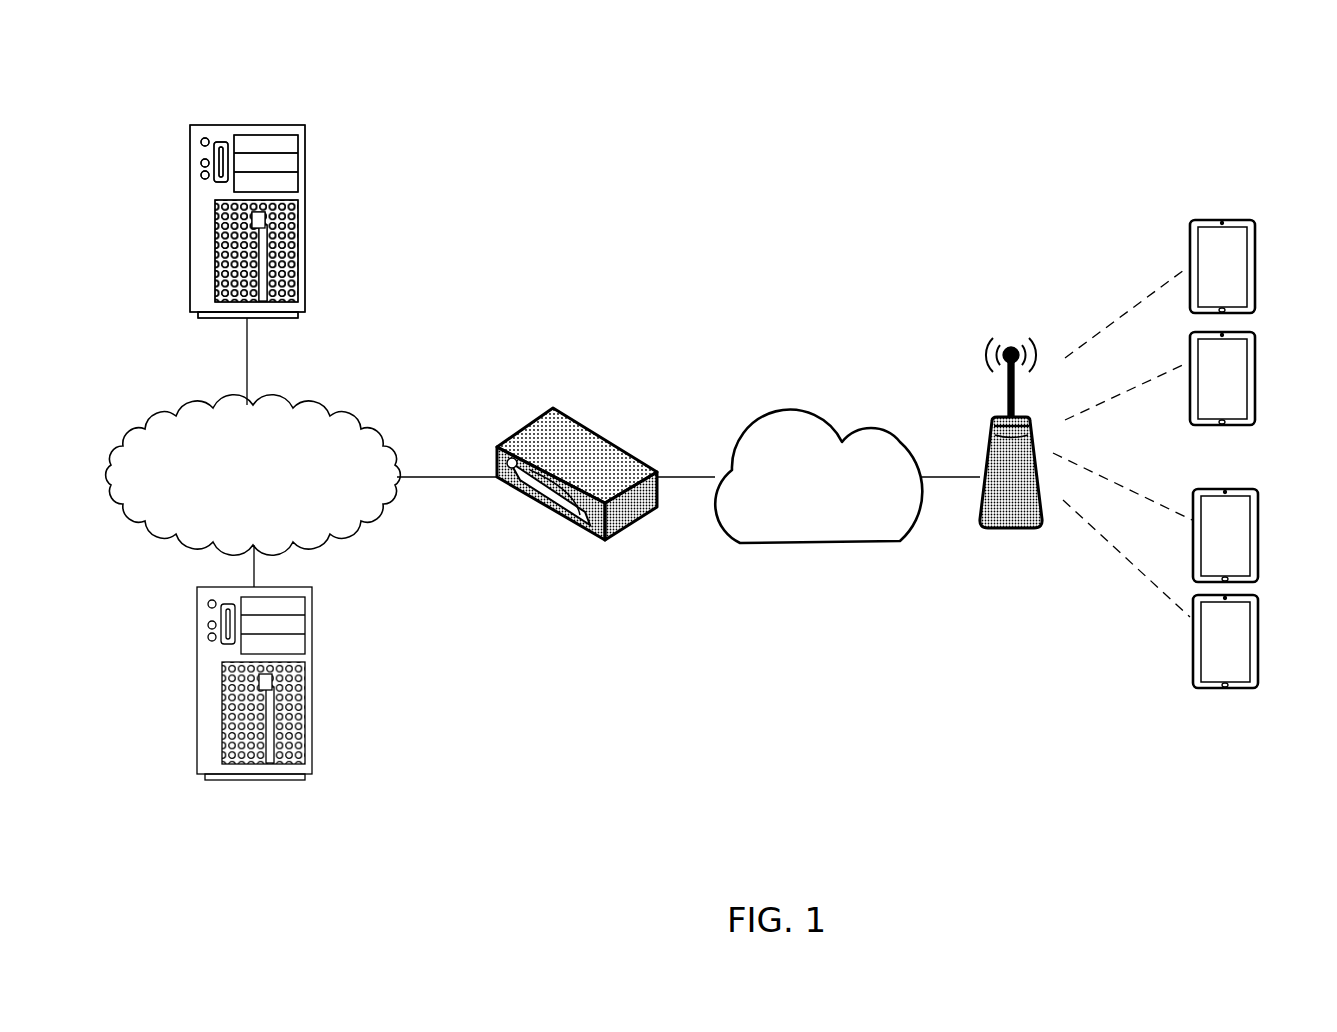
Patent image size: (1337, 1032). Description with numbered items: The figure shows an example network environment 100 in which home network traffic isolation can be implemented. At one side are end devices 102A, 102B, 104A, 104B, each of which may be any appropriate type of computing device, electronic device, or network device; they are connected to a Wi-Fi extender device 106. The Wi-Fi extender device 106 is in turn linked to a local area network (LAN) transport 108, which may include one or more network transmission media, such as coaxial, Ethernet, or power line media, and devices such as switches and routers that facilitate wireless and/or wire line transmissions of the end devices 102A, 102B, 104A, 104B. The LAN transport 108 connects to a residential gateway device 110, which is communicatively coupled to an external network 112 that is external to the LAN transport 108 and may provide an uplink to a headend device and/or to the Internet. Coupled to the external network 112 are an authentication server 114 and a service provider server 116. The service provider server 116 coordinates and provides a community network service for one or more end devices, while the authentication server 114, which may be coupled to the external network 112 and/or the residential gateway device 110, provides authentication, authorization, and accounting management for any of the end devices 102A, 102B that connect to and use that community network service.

The network environment 100 is at (220, 48).
The end device 102A is at (1190, 221).
The end device 102B is at (1257, 330).
The end device 104A is at (1223, 489).
The end device 104B is at (1223, 688).
The Wi-Fi extender device 106 is at (1016, 532).
The local area network (LAN) transport 108 is at (815, 410).
The residential gateway device 110 is at (605, 542).
The external network 112 is at (302, 411).
The authentication server 114 is at (305, 162).
The service provider server 116 is at (312, 603).